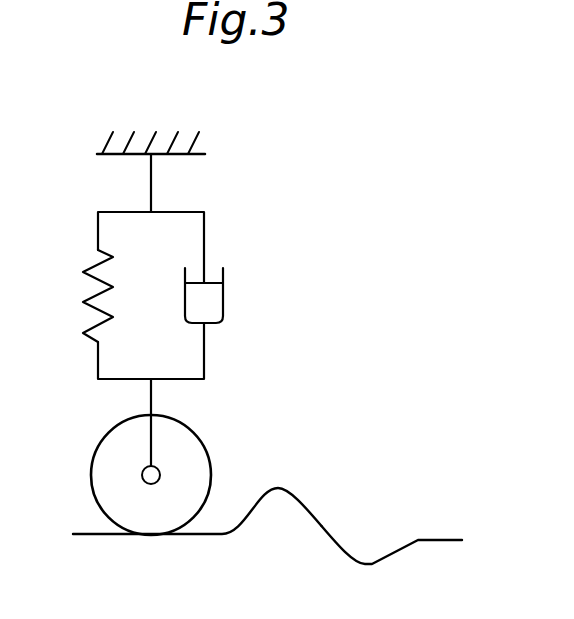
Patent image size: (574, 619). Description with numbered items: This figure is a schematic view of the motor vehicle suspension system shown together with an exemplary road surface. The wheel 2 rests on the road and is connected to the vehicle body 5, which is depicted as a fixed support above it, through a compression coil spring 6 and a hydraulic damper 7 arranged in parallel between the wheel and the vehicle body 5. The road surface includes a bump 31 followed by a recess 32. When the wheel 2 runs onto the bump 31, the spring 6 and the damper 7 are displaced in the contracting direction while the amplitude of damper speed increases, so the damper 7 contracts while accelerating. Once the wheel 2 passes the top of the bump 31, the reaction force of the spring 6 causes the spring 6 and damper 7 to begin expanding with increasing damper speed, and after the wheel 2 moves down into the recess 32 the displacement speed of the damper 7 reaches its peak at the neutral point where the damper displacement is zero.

The wheel 2 is at (201, 452).
The vehicle body 5 is at (182, 154).
The compression coil spring 6 is at (93, 298).
The hydraulic damper 7 is at (223, 302).
The bump 31 is at (278, 488).
The recess 32 is at (367, 564).